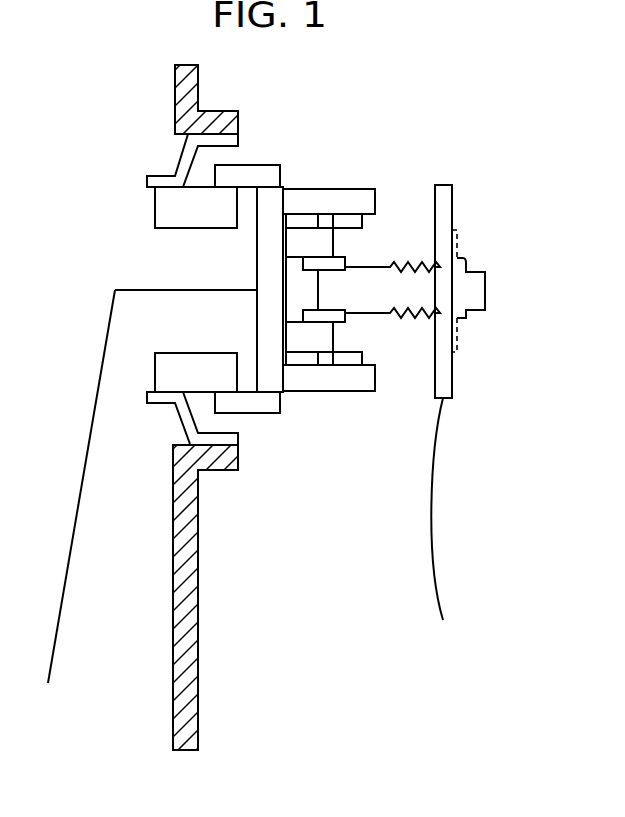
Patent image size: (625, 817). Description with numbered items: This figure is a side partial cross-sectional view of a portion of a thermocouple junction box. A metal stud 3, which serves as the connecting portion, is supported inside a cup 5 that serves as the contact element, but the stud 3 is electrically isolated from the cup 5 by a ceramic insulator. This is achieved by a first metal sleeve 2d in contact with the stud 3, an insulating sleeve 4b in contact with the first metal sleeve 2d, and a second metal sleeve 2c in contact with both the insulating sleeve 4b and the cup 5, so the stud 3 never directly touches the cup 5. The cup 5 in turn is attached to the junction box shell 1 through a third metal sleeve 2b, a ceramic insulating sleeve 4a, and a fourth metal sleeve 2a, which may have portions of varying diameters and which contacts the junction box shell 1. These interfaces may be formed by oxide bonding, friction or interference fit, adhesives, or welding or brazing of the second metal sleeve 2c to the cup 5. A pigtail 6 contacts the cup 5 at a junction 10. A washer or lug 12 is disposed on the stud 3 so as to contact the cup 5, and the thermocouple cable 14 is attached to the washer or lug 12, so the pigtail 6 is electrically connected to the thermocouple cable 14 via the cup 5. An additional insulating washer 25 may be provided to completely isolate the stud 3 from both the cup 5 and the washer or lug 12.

The junction box shell 1 is at (190, 648).
The fourth metal sleeve 2a is at (147, 185).
The third metal sleeve 2b is at (257, 172).
The second metal sleeve 2c is at (346, 205).
The first metal sleeve 2d is at (338, 264).
The stud 3 is at (487, 291).
The ceramic insulating sleeve 4a is at (162, 208).
The insulating sleeve 4b is at (325, 245).
The cup 5 is at (287, 388).
The pigtail 6 is at (78, 478).
The junction 10 is at (257, 288).
The washer or lug 12 is at (455, 200).
The thermocouple cable 14 is at (446, 535).
The additional washer 25 is at (458, 244).